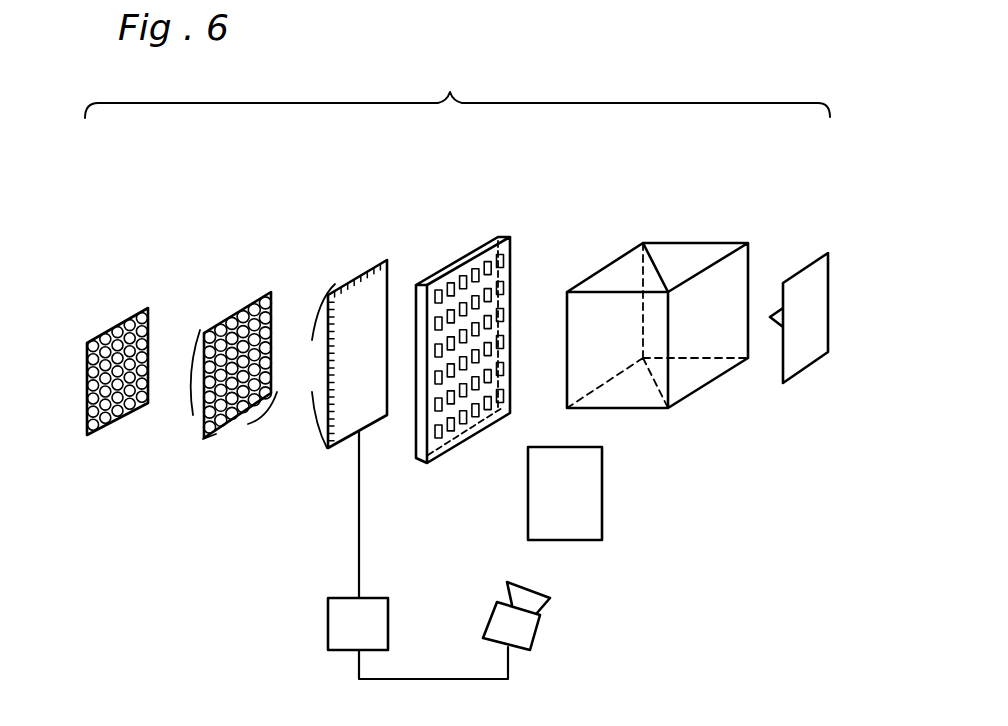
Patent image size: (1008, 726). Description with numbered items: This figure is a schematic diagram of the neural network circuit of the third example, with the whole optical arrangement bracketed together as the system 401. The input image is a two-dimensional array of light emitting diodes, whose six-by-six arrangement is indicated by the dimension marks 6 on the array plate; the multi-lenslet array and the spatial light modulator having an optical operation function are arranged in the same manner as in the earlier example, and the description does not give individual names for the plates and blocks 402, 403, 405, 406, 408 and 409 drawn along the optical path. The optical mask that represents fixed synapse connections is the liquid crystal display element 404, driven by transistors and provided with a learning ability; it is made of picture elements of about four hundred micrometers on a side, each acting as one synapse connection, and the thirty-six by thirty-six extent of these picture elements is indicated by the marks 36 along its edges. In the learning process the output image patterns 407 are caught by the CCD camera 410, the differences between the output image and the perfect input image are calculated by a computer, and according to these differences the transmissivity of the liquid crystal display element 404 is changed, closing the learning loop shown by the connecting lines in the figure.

The optical projection system 401 is at (457, 80).
The first lens array 402 is at (115, 322).
The second lens array 403 is at (232, 322).
The liquid crystal display element 404 is at (387, 261).
The liquid crystal light valve 405 is at (472, 253).
The beam splitter prism 406 is at (685, 253).
The output image patterns 407 is at (522, 630).
The screen 408 is at (810, 275).
The display unit 409 is at (588, 477).
The CCD camera 410 is at (340, 633).
The synapse connection array dimension 36 is at (319, 350).
The LED array dimension 6 is at (227, 391).